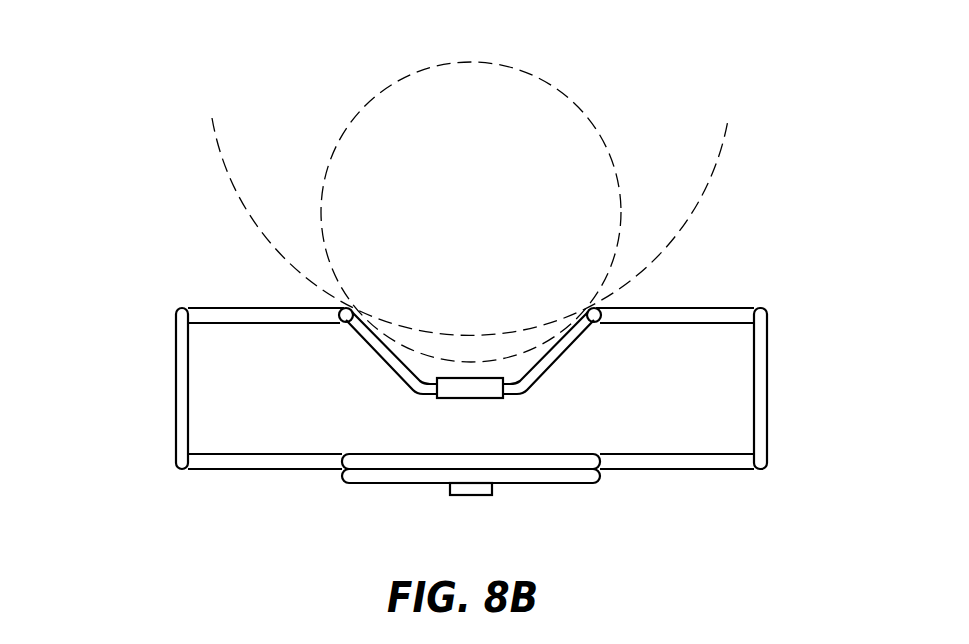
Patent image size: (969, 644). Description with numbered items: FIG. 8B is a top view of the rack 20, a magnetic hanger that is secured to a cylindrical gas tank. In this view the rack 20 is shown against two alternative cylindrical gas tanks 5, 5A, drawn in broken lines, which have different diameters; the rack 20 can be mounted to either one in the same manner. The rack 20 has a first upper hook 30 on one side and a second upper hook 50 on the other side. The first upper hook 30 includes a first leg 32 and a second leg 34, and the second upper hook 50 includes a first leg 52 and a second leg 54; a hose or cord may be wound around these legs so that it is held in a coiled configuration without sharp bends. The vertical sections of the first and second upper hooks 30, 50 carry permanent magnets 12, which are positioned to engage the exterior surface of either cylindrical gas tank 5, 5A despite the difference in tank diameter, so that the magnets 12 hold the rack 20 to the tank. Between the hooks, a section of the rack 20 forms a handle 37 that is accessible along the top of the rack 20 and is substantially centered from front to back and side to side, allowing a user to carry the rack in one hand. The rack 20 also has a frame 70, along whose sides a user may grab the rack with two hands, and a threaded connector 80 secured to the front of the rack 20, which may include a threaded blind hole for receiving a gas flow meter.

The cylindrical gas tank 5 is at (543, 87).
The cylindrical gas tank 5A is at (727, 130).
The rack 20 is at (137, 273).
The first upper hook 30 is at (232, 387).
The first leg 32 is at (272, 470).
The second leg 34 is at (213, 306).
The second upper hook 50 is at (707, 390).
The first leg 52 is at (690, 470).
The second leg 54 is at (714, 306).
The permanent magnet 12 is at (345, 325).
The handle 37 is at (470, 400).
The frame 70 is at (565, 485).
The threaded connector 80 is at (470, 496).